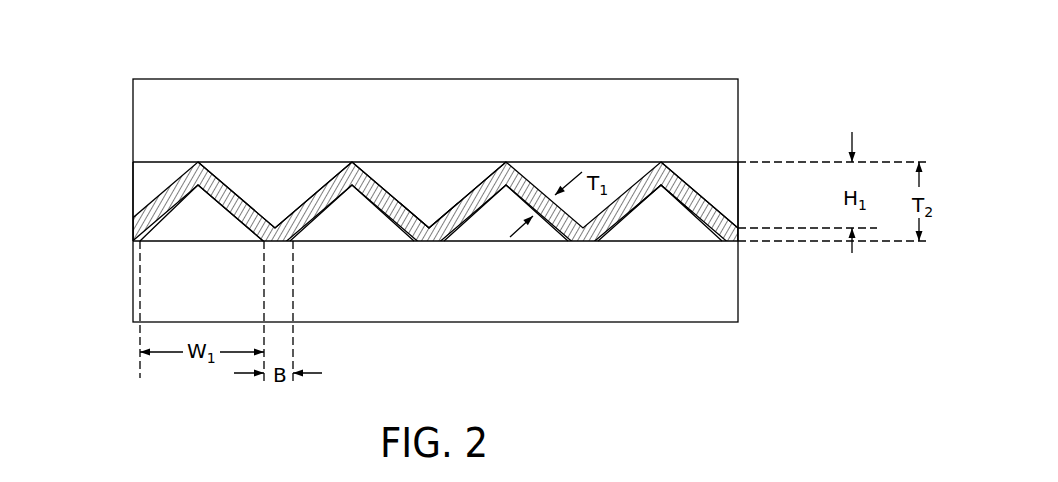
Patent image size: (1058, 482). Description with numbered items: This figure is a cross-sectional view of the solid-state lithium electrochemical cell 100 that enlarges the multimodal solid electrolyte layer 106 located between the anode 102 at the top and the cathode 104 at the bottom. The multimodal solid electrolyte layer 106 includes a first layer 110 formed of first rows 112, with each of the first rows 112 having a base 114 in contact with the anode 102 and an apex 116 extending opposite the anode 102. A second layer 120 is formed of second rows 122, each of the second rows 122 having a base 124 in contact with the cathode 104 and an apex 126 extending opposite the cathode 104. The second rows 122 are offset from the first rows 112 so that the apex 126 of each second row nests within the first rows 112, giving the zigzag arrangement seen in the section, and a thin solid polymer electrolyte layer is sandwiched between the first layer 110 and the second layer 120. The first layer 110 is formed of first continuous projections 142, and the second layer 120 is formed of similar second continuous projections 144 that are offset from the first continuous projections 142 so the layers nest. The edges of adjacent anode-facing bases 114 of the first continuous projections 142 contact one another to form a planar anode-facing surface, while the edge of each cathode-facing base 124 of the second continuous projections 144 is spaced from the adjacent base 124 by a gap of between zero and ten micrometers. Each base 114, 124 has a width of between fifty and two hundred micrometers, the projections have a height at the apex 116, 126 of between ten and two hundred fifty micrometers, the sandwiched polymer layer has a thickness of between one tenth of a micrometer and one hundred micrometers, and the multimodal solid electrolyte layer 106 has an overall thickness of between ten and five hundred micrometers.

The solid-state lithium electrochemical cell 100 is at (108, 118).
The anode 102 is at (705, 97).
The cathode 104 is at (710, 292).
The multimodal solid electrolyte layer 106 is at (112, 213).
The first layer 110 is at (152, 176).
The first rows 112 is at (277, 183).
The base 114 is at (440, 165).
The apex 116 is at (431, 217).
The second layer 120 is at (677, 221).
The second rows 122 is at (493, 229).
The base 124 is at (337, 231).
The apex 126 is at (656, 190).
The first continuous projections 142 is at (720, 178).
The second continuous projections 144 is at (193, 210).